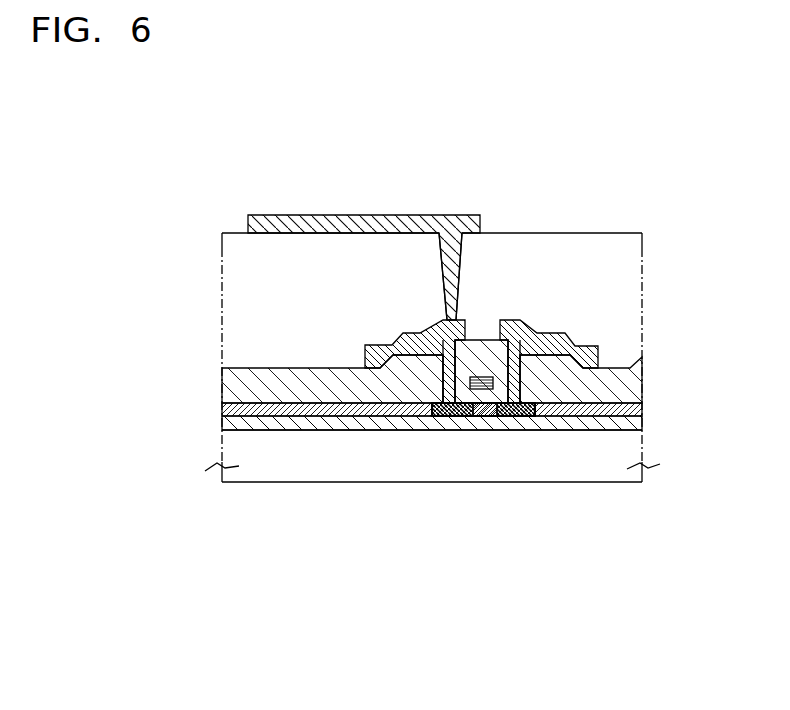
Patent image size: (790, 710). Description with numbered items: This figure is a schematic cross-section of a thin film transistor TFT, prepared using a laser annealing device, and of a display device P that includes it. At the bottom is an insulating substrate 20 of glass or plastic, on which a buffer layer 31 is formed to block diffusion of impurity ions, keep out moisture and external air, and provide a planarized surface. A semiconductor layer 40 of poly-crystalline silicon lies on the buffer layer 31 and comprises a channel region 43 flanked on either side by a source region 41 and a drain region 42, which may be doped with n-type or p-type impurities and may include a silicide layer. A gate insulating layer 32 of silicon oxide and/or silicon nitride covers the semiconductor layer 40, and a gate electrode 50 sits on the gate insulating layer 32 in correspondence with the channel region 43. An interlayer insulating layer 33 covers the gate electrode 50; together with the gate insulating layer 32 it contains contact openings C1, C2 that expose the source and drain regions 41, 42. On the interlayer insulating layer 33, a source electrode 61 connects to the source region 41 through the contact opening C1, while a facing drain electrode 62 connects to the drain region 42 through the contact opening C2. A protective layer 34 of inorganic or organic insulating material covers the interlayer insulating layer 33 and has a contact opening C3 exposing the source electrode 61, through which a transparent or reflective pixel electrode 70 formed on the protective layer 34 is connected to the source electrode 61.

The substrate 20 is at (635, 443).
The buffer layer 31 is at (637, 422).
The gate insulating layer 32 is at (637, 408).
The interlayer insulating layer 33 is at (637, 383).
The protective layer 34 is at (635, 302).
The semiconductor layer 40 is at (492, 499).
The source region 41 is at (450, 416).
The drain region 42 is at (510, 416).
The channel region 43 is at (478, 416).
The gate electrode 50 is at (493, 383).
The source electrode 61 is at (420, 333).
The drain electrode 62 is at (550, 335).
The pixel electrode 70 is at (365, 220).
The contact opening C1 is at (464, 354).
The contact opening C2 is at (500, 354).
The contact opening C3 is at (465, 258).
The display device P is at (622, 174).
The thin film transistor TFT is at (522, 511).